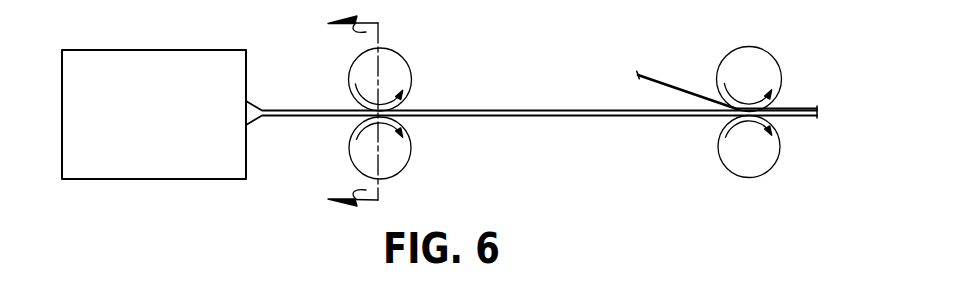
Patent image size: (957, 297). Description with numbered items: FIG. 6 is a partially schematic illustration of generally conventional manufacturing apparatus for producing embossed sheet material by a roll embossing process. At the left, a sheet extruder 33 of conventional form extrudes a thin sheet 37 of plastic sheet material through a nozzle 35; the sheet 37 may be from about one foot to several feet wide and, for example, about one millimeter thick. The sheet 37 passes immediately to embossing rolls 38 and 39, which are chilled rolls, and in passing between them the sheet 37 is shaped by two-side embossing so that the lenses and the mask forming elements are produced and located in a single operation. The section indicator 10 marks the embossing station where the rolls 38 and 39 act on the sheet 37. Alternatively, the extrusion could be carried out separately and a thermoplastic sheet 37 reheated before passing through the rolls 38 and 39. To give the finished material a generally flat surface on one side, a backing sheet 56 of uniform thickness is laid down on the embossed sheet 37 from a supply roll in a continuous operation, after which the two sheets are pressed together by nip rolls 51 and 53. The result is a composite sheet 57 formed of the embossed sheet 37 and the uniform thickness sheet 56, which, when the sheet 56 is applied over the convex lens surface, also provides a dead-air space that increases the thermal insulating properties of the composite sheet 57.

The sheet extruder 33 is at (127, 50).
The nozzle 35 is at (248, 101).
The sheet 37 is at (277, 120).
The section line 10- 10 is at (333, 115).
The embossing roll 38 is at (392, 52).
The embossing roll 39 is at (410, 160).
The backing sheet 56 is at (683, 88).
The nip roll 51 is at (758, 47).
The nip roll 53 is at (778, 140).
The composite sheet 57 is at (785, 107).